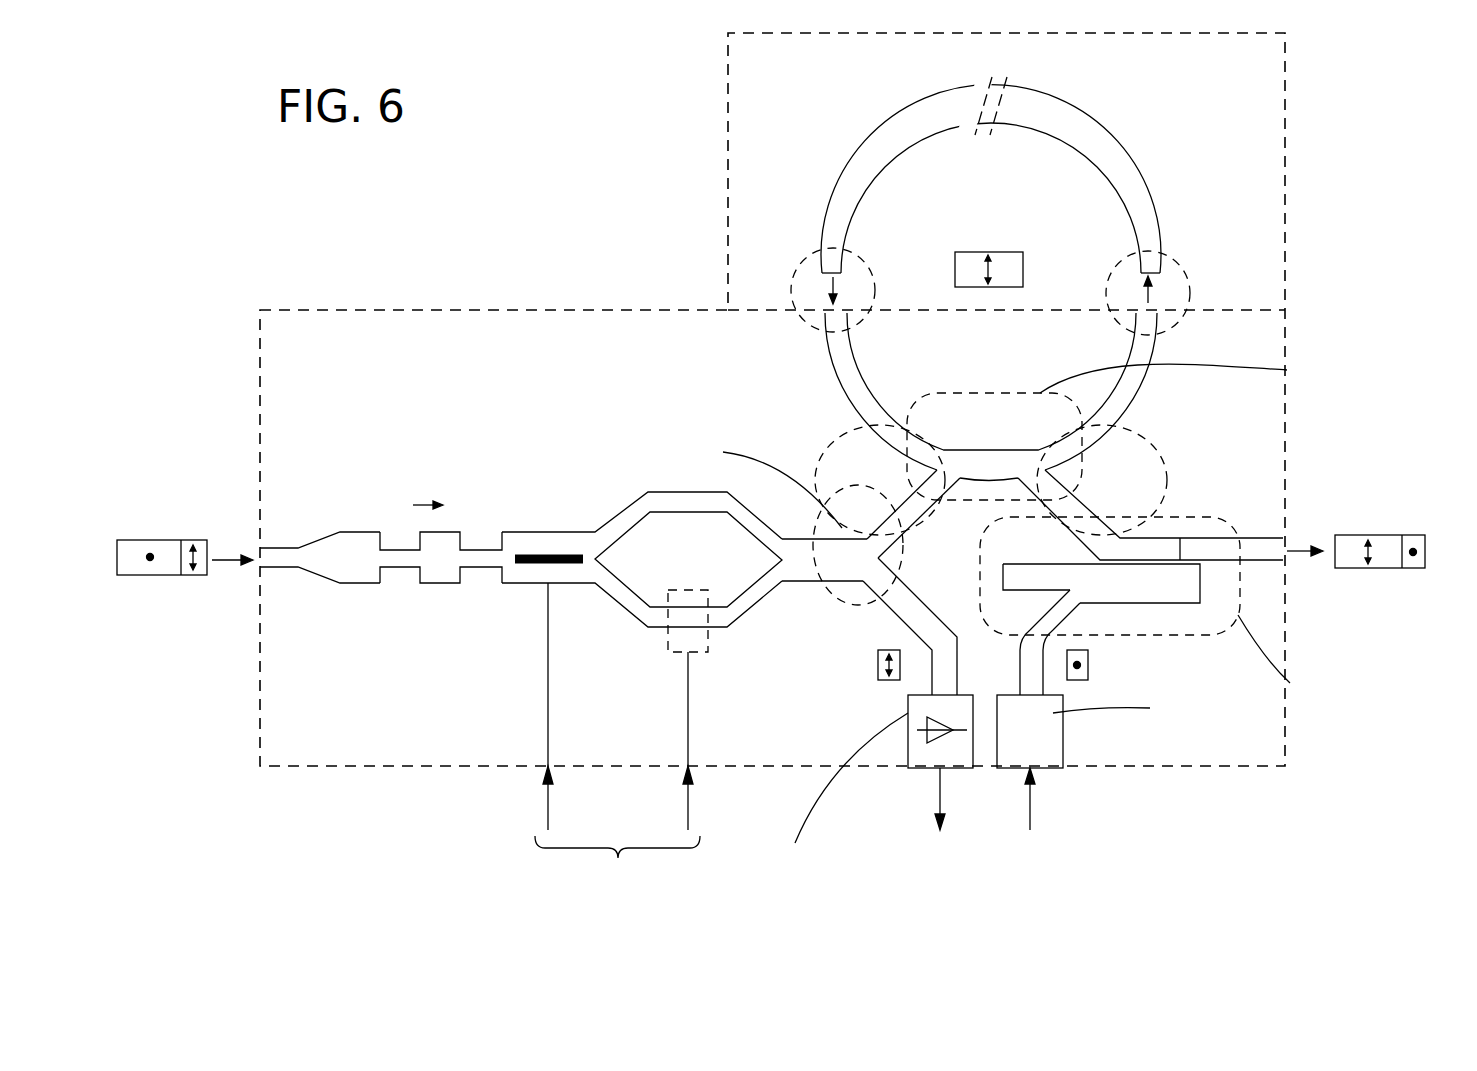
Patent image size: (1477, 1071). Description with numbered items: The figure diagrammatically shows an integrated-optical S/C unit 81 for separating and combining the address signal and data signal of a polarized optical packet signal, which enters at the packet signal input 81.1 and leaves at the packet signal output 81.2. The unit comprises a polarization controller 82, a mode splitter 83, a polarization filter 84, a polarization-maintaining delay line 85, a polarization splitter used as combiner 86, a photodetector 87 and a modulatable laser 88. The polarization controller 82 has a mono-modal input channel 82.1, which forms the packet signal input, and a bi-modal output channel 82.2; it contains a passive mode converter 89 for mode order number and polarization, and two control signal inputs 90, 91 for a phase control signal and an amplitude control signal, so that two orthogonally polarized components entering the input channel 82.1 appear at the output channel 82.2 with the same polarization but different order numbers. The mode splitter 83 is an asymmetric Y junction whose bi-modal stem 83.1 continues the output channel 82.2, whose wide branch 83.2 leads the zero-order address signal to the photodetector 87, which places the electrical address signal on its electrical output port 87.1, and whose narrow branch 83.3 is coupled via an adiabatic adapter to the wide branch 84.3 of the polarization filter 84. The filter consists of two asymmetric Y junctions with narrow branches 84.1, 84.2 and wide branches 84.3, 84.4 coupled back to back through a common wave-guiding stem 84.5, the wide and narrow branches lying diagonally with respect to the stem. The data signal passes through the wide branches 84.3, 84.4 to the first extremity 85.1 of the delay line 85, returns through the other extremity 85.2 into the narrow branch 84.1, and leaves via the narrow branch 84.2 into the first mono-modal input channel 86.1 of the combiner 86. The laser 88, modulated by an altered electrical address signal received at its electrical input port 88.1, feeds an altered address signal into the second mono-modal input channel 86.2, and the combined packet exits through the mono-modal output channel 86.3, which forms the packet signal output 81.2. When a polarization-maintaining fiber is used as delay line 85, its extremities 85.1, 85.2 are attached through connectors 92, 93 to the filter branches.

The S/C unit 81 is at (518, 310).
The packet signal input 81.1 is at (259, 568).
The packet signal output 81.2 is at (1283, 560).
The polarization controller 82 is at (563, 602).
The mono-modal input channel 82.1 is at (272, 557).
The bi-modal output channel 82.2 is at (802, 566).
The mode splitter 83 is at (806, 558).
The bi-modal stem 83.1 is at (843, 568).
The wide branch 83.2 is at (888, 580).
The narrow branch 83.3 is at (880, 546).
The polarization filter 84 is at (991, 424).
The narrow branch 84.1 is at (897, 440).
The narrow branch 84.2 is at (1057, 477).
The wide branch 84.3 is at (920, 480).
The wide branch 84.4 is at (1100, 445).
The common wave-guiding stem 84.5 is at (987, 467).
The polarization-maintaining delay line 85 is at (990, 173).
The first extremity of the delay line 85.1 is at (1158, 265).
The other extremity of the delay line 85.2 is at (828, 262).
The polarization splitter used as combiner 86 is at (1200, 586).
The first mono-modal input channel 86.1 is at (1100, 540).
The second mono-modal input channel 86.2 is at (1062, 600).
The mono-modal output channel 86.3 is at (1180, 547).
The photodetector 87 is at (859, 763).
The electrical output port 87.1 is at (937, 780).
The laser 88 is at (1108, 740).
The electrical input port 88.1 is at (1035, 772).
The passive mode converter 89 is at (440, 563).
The control signal input 90 is at (545, 775).
The control signal input 91 is at (690, 775).
The connector 92 is at (795, 290).
The connector 93 is at (1183, 276).